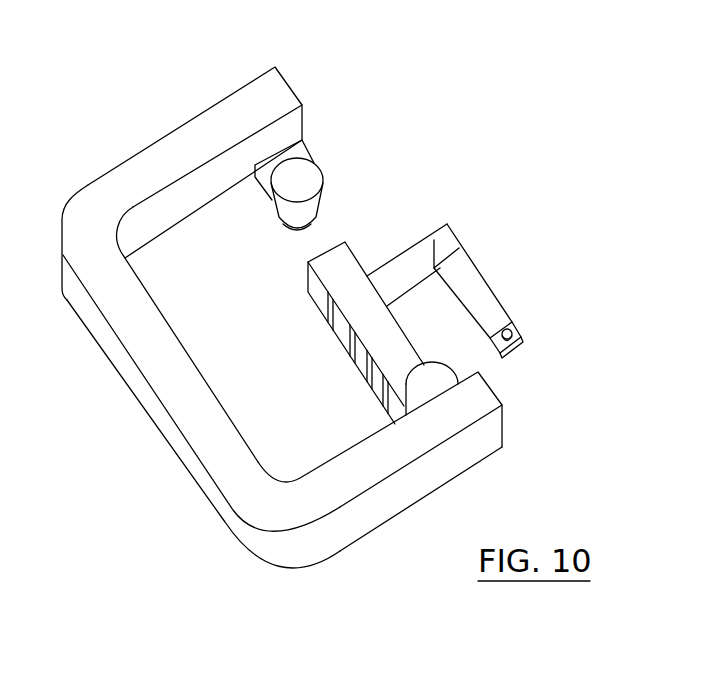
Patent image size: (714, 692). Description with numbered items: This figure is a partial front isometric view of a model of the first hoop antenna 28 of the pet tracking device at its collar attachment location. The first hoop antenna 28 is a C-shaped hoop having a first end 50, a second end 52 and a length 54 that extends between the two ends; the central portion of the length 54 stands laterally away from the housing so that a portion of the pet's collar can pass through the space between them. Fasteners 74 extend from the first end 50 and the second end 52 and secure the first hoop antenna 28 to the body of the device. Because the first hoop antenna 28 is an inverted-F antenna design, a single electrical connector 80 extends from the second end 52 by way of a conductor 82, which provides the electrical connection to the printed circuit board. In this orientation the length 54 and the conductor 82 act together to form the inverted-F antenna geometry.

The first hoop antenna 28 is at (183, 438).
The first end 50 is at (297, 83).
The second end 52 is at (503, 425).
The length 54 is at (150, 348).
The fasteners 74 is at (303, 177).
The electrical connector 80 is at (520, 337).
The conductor 82 is at (352, 262).